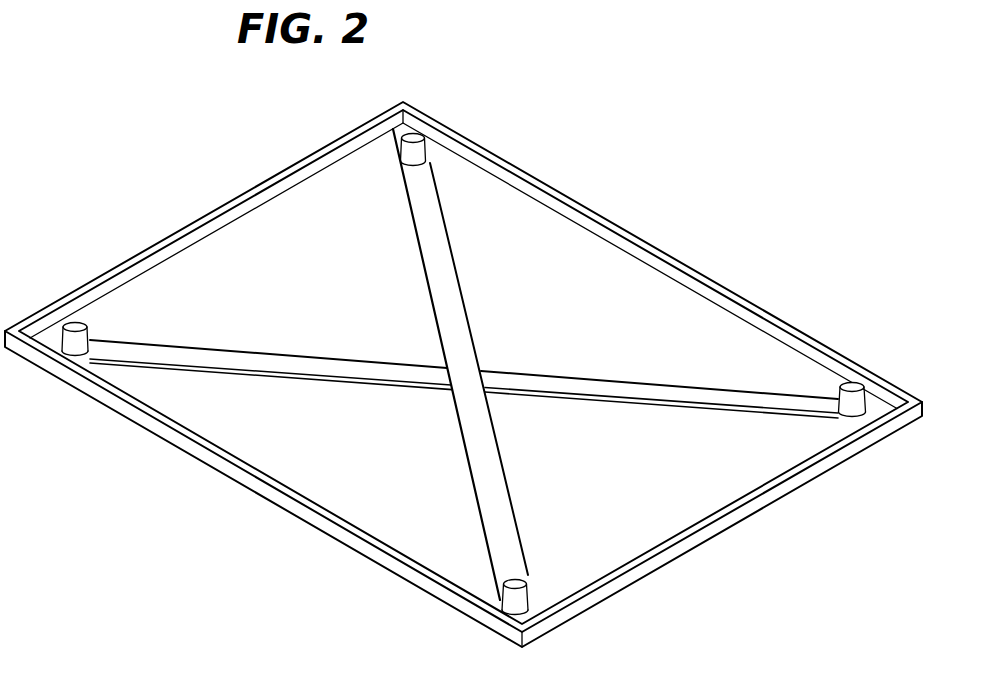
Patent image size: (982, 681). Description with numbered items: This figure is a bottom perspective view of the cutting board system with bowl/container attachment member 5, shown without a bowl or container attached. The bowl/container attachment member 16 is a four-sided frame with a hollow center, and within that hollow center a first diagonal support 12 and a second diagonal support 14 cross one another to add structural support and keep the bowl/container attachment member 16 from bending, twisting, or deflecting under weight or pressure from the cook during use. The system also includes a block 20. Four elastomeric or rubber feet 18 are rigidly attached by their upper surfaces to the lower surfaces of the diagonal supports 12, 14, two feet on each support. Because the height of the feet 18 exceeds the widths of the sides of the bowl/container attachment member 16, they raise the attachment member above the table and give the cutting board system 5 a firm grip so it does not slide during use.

The cutting board system with bowl/container attachment member 5 is at (106, 112).
The first diagonal support 12 is at (456, 270).
The second diagonal support 14 is at (290, 356).
The bowl/container attachment member 16 is at (228, 203).
The elastomeric or rubber feet 18 is at (416, 136).
The block 20 is at (331, 459).